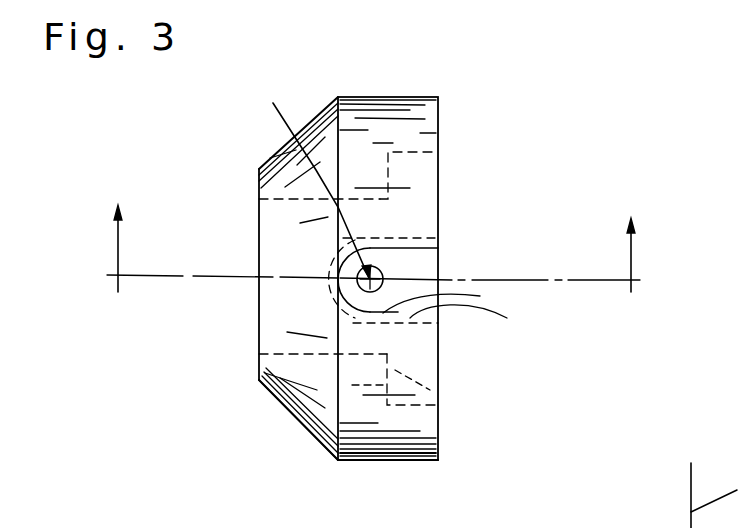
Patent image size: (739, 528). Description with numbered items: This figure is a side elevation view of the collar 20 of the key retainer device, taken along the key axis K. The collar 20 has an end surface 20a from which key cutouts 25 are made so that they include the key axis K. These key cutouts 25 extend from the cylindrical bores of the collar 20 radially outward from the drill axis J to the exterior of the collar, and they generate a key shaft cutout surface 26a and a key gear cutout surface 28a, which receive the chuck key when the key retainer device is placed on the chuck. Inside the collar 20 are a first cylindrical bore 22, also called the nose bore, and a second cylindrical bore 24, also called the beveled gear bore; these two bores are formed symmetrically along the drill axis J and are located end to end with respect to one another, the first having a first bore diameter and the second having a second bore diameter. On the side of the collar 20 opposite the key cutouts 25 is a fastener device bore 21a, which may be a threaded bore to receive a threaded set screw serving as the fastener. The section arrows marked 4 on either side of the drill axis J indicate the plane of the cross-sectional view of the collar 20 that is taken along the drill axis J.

The collar 20 is at (398, 95).
The end surface 20a is at (437, 442).
The fastener device bore 21a is at (338, 313).
The first cylindrical bore 22 is at (297, 303).
The second cylindrical bore 24 is at (437, 388).
The key cutouts 25 is at (414, 276).
The key shaft cutout surface 26a is at (454, 300).
The key gear cutout surface 28a is at (438, 328).
The key axis K is at (309, 178).
The drill axis J is at (245, 274).
The section line 4- 4 is at (367, 244).